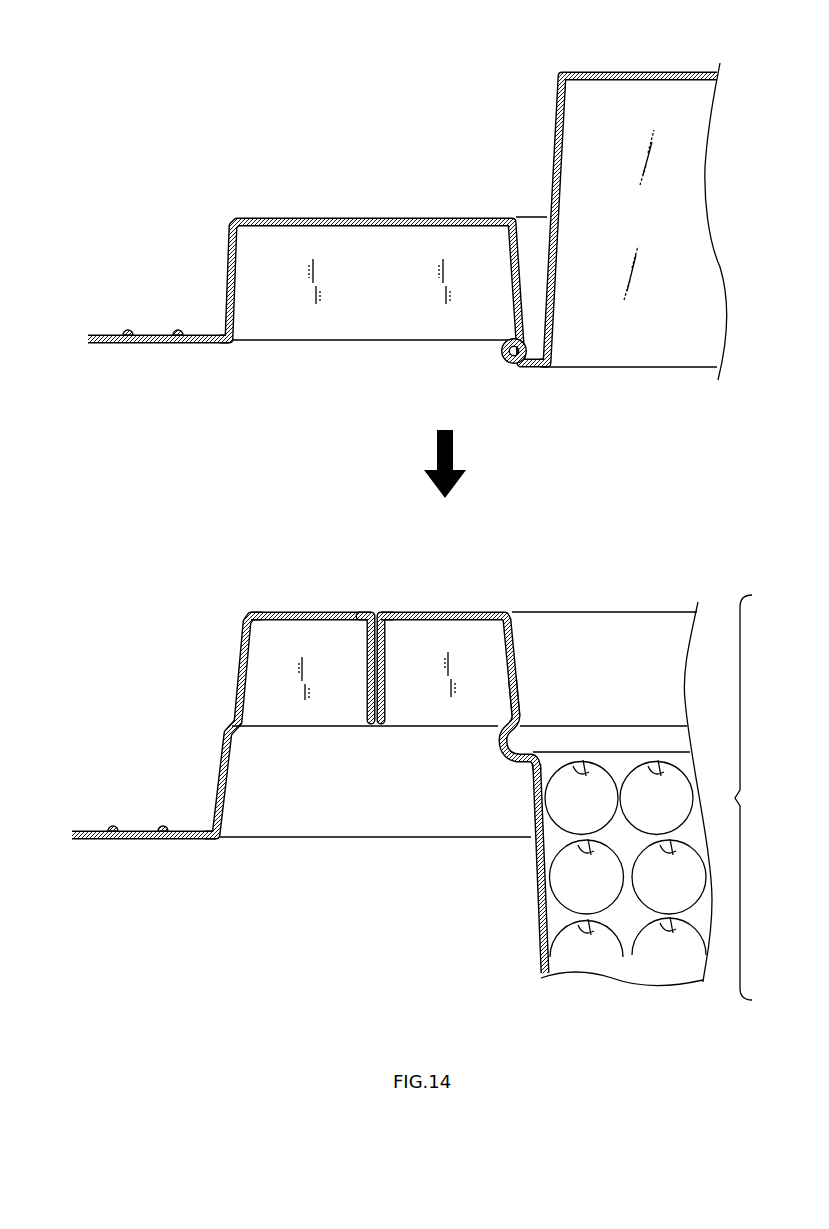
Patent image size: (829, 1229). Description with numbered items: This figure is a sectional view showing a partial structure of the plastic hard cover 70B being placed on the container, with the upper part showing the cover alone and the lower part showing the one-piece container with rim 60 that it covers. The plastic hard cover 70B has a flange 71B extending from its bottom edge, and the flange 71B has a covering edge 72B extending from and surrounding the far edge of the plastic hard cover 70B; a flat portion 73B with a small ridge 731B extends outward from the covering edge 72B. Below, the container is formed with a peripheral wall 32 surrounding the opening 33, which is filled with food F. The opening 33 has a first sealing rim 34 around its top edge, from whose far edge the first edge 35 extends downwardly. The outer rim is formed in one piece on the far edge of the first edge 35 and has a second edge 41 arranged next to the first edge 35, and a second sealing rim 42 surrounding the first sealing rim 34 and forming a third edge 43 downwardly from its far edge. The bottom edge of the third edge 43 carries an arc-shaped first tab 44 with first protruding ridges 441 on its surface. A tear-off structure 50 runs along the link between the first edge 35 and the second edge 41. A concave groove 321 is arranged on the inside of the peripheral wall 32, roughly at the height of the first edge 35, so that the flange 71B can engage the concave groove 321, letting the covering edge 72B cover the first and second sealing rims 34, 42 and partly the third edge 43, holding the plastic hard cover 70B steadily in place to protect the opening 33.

The plastic hard cover 70B is at (638, 70).
The covering edge 72B is at (368, 218).
The flange portion 73B is at (100, 333).
The projection 731B is at (178, 333).
The flange 71B is at (503, 359).
The second sealing rim 42 is at (293, 612).
The first sealing rim 34 is at (407, 612).
The third edge 43 is at (235, 672).
The first tab 44 is at (85, 830).
The first protruding ridges 441 is at (167, 830).
The second edge 41 is at (367, 673).
The first edge 35 is at (385, 673).
The tear-off structure 50 is at (375, 729).
The concave groove 321 is at (508, 748).
The opening 33 is at (650, 662).
The peripheral wall 32 is at (533, 872).
The food F is at (565, 957).
The one-piece container with rim 60 is at (758, 797).